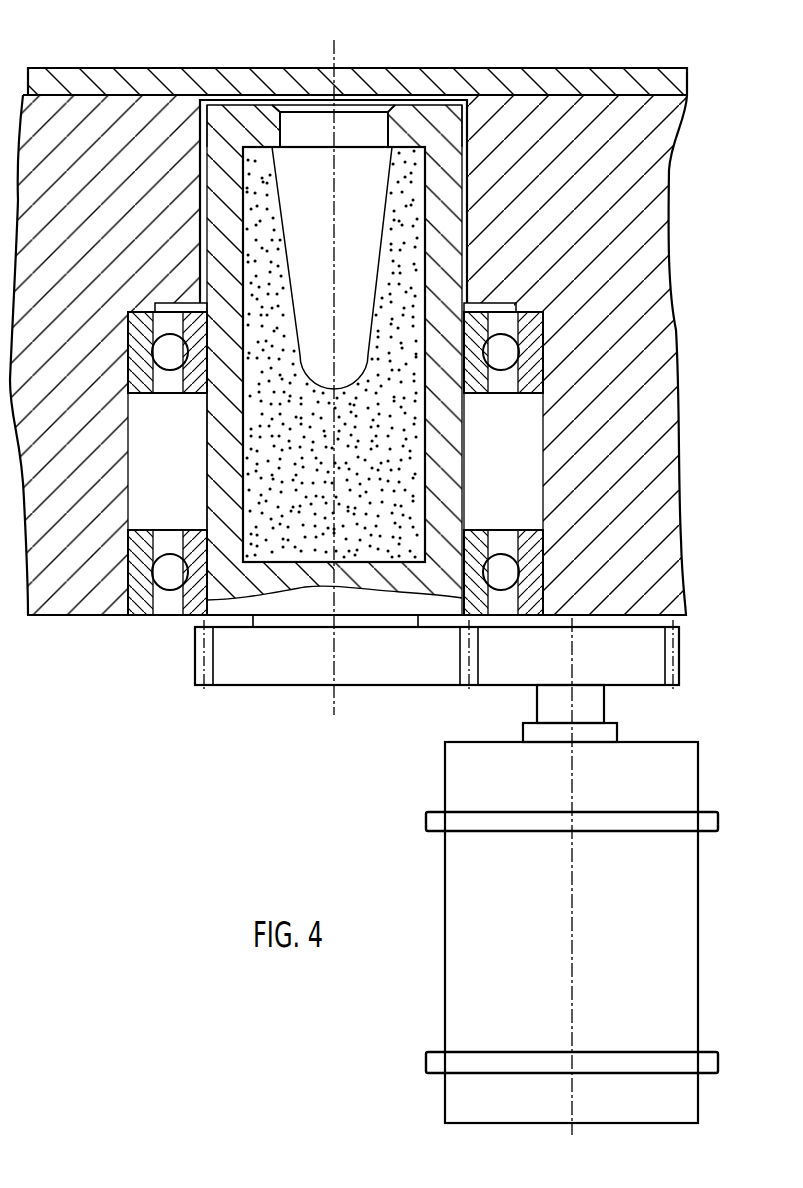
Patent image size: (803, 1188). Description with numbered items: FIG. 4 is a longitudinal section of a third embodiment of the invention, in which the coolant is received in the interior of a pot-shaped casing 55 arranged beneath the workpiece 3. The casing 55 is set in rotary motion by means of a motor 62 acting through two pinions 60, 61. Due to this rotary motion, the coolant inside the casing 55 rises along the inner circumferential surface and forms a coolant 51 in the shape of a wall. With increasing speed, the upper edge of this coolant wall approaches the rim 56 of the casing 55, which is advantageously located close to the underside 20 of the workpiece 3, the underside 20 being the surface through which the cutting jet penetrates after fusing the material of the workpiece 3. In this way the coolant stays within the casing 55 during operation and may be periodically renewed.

The workpiece 3 is at (587, 83).
The underside 20 is at (295, 93).
The coolant 51 is at (407, 248).
The pot-shaped casing 55 is at (221, 575).
The rim 56 is at (247, 117).
The pinion 60 is at (270, 668).
The pinion 61 is at (640, 666).
The motor 62 is at (465, 1103).